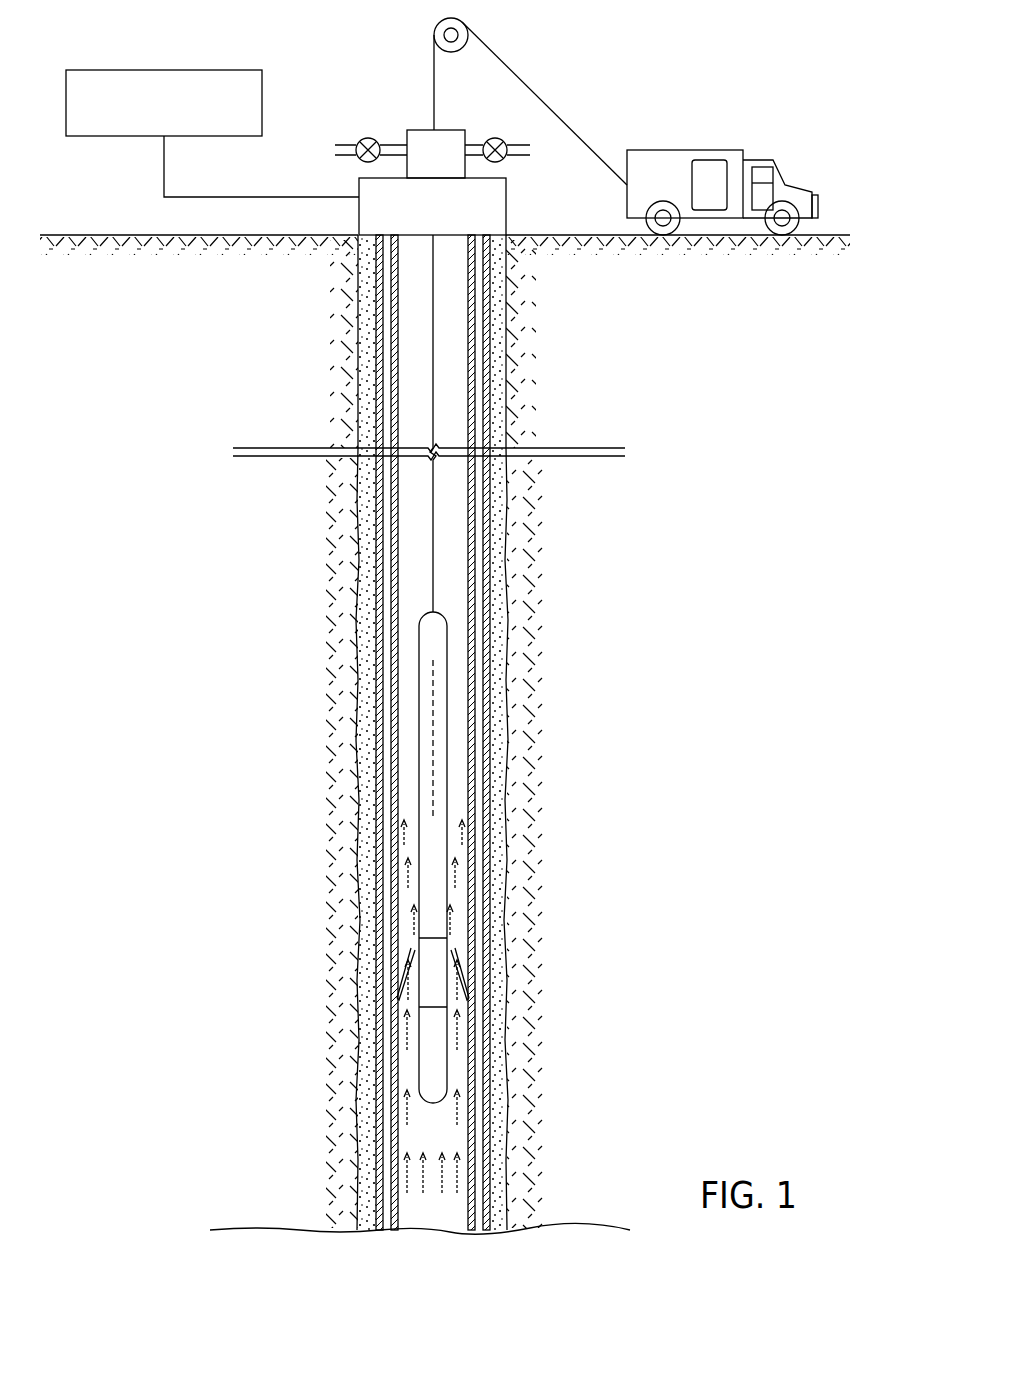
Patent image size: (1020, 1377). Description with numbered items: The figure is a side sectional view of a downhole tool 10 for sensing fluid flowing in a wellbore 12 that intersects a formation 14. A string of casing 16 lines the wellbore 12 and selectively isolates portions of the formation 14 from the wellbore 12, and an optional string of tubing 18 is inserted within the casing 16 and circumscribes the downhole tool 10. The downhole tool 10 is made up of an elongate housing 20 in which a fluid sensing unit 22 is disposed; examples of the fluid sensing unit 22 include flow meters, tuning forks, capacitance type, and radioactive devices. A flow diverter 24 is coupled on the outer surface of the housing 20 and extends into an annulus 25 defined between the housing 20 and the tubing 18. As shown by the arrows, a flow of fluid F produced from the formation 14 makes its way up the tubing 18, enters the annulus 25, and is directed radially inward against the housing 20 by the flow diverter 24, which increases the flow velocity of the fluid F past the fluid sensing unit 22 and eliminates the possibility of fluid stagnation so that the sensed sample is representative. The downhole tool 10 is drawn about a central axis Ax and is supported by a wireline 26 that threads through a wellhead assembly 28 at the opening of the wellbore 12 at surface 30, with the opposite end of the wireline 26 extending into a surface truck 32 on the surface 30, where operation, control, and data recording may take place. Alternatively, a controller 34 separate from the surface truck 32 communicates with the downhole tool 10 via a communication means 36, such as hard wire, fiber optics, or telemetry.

The downhole tool 10 is at (430, 827).
The wellbore 12 is at (357, 1080).
The formation 14 is at (616, 977).
The casing 16 is at (487, 800).
The tubing 18 is at (475, 1052).
The housing 20 is at (449, 660).
The fluid sensing unit 22 is at (447, 950).
The flow diverter 24 is at (405, 955).
The annulus 25 is at (400, 640).
The wireline 26 is at (436, 497).
The wellhead assembly 28 is at (405, 112).
The surface 30 is at (572, 235).
The surface truck 32 is at (705, 150).
The controller 34 is at (148, 70).
The communication means 36 is at (162, 172).
The tool axis Ax is at (433, 730).
The fluid flow F is at (425, 1160).